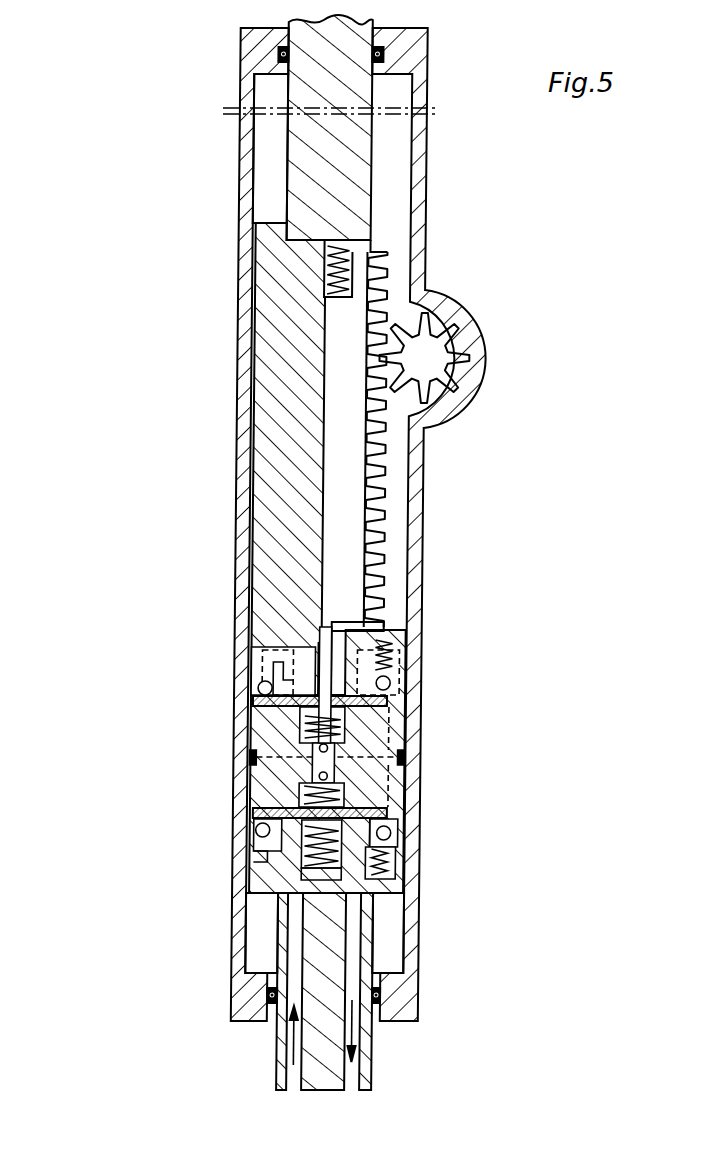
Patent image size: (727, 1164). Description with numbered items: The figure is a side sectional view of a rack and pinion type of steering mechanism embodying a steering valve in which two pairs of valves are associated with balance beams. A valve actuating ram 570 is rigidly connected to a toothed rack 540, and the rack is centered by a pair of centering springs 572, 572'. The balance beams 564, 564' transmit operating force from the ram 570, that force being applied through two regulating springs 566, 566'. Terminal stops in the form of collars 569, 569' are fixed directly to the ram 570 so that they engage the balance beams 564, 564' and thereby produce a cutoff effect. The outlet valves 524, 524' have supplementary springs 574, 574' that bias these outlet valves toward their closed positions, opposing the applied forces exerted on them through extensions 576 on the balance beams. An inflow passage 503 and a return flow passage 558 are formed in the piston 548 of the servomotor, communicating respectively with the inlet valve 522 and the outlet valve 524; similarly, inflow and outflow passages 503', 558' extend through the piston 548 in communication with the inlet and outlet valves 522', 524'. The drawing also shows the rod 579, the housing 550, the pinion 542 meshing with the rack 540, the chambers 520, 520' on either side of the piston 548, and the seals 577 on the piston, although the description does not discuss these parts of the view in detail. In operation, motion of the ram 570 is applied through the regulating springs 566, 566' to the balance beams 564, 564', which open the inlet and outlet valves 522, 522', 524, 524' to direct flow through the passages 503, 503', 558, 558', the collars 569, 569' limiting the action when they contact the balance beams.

The piston rod 579 is at (318, 97).
The upper cylinder chamber 520' is at (159, 148).
The centering spring 572' is at (209, 421).
The cylinder housing 550 is at (245, 475).
The pinion gear 542 is at (432, 362).
The toothed rack 540 is at (345, 487).
The collar 569' is at (161, 616).
The inlet valve 522' is at (173, 643).
The regulating spring 566' is at (151, 668).
The piston 548 is at (252, 703).
The piston seal 577 is at (252, 757).
The inflow passage 503' is at (215, 788).
The regulating spring 566 is at (156, 835).
The inlet valve 522 is at (208, 862).
The collar 569 is at (148, 910).
The centering spring 572 is at (185, 940).
The lower cylinder chamber 520 is at (254, 954).
The inflow passage 503 is at (202, 991).
The supplementary spring 574' is at (506, 603).
The outlet valve 524' is at (497, 643).
The balance beam 564' is at (492, 677).
The valve actuating ram 570 is at (337, 754).
The outflow passage 558' is at (512, 757).
The balance beam 564 is at (466, 831).
The extension 576 is at (388, 830).
The outlet valve 524 is at (500, 872).
The supplementary spring 574 is at (498, 911).
The return flow passage 558 is at (489, 991).